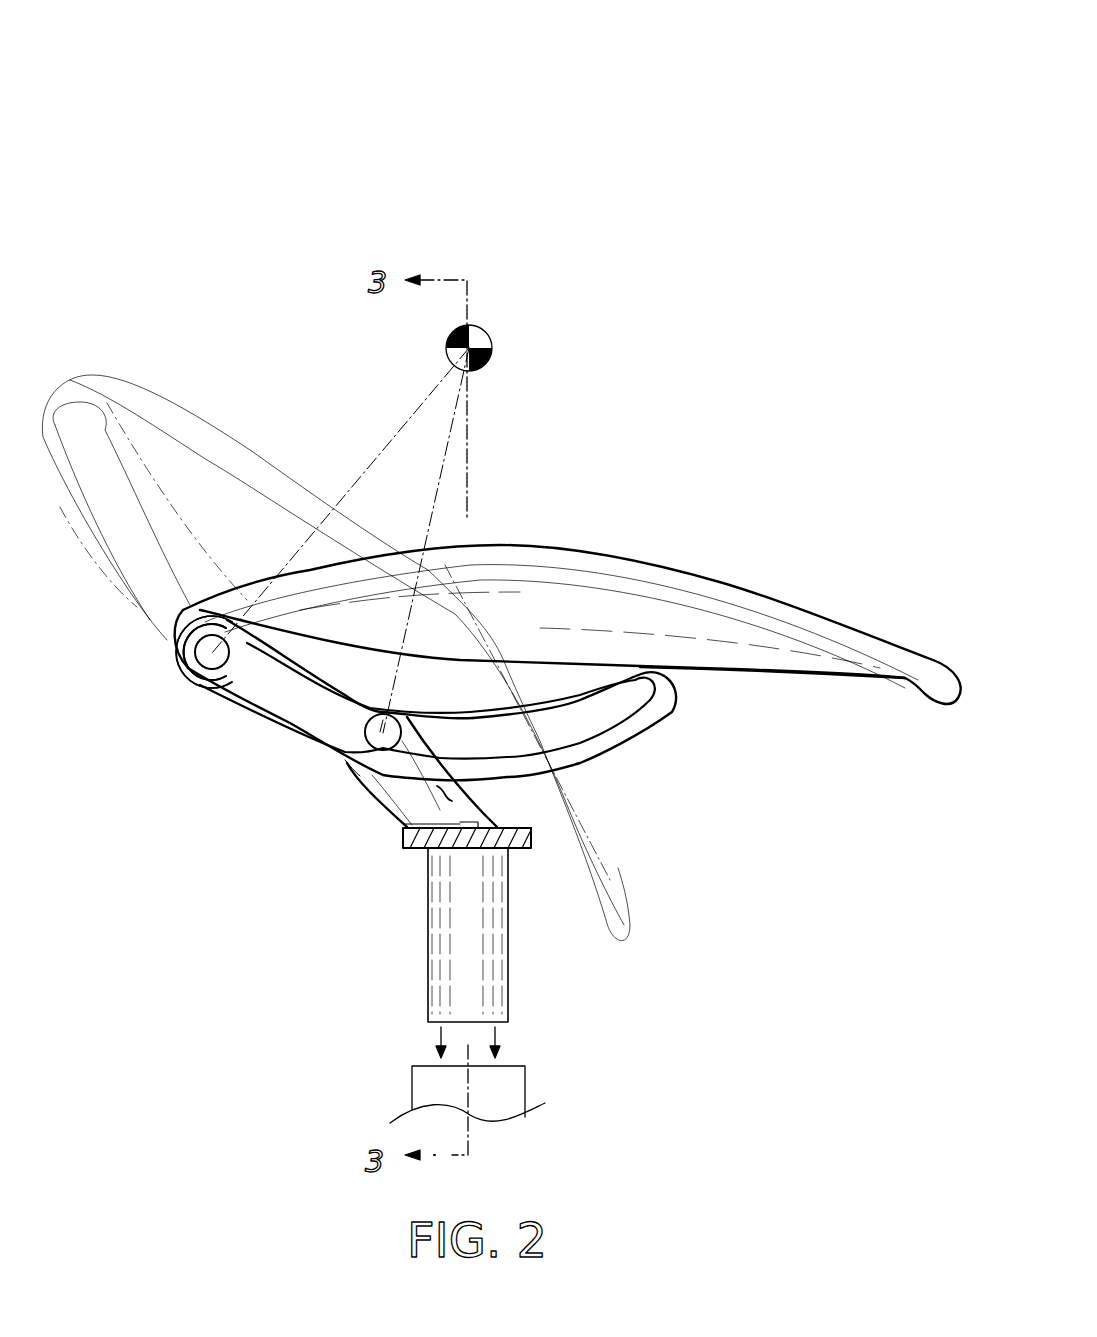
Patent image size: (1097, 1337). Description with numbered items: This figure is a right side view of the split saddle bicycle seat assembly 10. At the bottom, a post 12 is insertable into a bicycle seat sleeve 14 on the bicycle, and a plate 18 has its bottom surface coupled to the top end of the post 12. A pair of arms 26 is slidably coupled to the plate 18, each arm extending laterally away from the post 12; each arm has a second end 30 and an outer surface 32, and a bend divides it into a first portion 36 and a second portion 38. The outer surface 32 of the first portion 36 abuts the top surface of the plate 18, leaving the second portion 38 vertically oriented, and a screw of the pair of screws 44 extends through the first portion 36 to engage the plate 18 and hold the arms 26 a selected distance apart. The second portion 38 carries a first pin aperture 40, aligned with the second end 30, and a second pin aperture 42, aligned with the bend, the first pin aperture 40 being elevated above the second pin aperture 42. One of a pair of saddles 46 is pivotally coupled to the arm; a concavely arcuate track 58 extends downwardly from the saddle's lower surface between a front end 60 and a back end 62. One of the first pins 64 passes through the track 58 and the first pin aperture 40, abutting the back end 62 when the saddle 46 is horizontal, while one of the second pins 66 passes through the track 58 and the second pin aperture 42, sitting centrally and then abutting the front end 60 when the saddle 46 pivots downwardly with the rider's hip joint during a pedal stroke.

The split saddle bicycle seat assembly 10 is at (583, 163).
The post 12 is at (443, 957).
The bicycle seat sleeve 14 is at (507, 1100).
The plate 18 is at (533, 831).
The arms 26 is at (380, 795).
The second end 30 is at (200, 640).
The outer surface 32 is at (458, 800).
The first portion 36 is at (500, 818).
The second portion 38 is at (354, 765).
The first pin aperture 40 is at (210, 667).
The second pin aperture 42 is at (390, 736).
The screws 44 is at (420, 826).
The saddles 46 is at (726, 585).
The tracks 58 is at (672, 708).
The front end 60 is at (683, 672).
The back end 62 is at (199, 645).
The first pins 64 is at (211, 645).
The second pins 66 is at (375, 735).